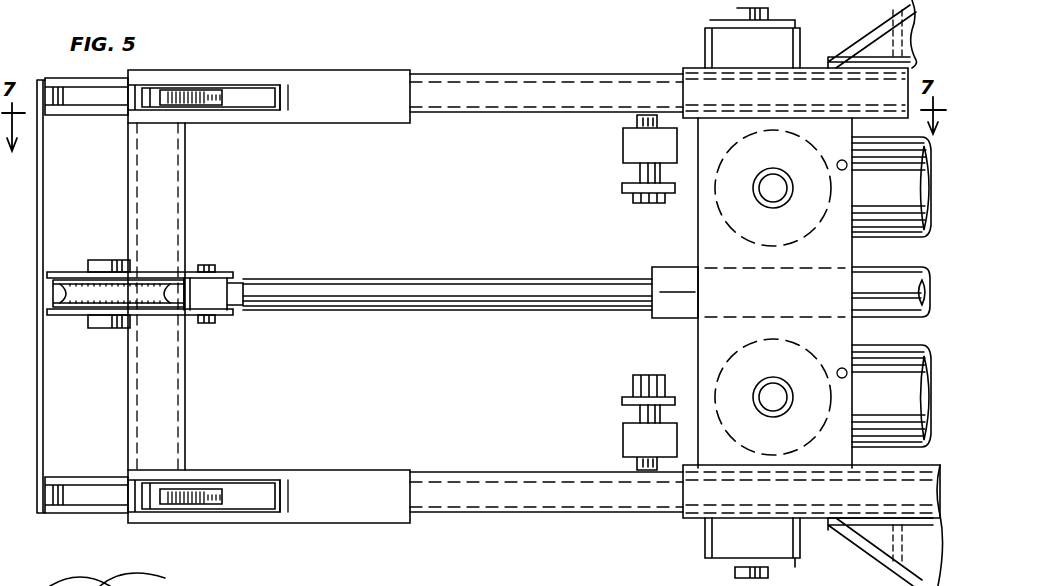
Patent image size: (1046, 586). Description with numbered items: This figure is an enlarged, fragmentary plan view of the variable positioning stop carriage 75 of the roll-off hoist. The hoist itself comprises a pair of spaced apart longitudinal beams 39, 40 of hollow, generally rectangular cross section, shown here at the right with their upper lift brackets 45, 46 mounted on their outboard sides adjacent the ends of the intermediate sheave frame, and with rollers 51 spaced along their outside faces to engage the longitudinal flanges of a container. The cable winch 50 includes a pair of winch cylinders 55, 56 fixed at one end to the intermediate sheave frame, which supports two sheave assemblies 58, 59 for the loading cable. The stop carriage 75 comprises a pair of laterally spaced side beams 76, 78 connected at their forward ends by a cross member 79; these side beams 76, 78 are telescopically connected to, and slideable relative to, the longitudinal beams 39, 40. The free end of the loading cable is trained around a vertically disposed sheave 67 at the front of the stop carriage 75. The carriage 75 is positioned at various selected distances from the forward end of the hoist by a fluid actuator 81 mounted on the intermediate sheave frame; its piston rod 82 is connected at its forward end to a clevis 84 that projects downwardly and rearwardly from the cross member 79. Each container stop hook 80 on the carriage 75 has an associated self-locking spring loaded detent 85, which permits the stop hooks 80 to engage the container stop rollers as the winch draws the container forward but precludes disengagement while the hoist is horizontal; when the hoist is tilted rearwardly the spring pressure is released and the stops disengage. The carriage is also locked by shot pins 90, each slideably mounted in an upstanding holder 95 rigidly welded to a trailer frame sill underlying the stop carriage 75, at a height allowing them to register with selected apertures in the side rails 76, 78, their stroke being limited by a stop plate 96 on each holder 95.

The longitudinal beam 39 is at (822, 490).
The longitudinal beam 40 is at (808, 90).
The upper lift bracket 45 is at (905, 583).
The upper lift bracket 46 is at (905, 4).
The cable winch 50 is at (689, 248).
The roller 51 is at (727, 55).
The winch cylinder 55 is at (900, 357).
The winch cylinder 56 is at (888, 223).
The sheave assembly 58 is at (715, 330).
The sheave assembly 59 is at (712, 215).
The sheave 67 is at (82, 297).
The stop carriage 75 is at (316, 523).
The side beam 76 is at (537, 490).
The side beam 78 is at (447, 92).
The cross member 79 is at (185, 180).
The container stop hook 80 is at (62, 87).
The fluid actuator 81 is at (872, 310).
The piston rod 82 is at (333, 283).
The clevis 84 is at (220, 272).
The spring loaded detent 85 is at (210, 92).
The shot pin 90 is at (643, 172).
The holder 95 is at (637, 143).
The stop plate 96 is at (622, 188).